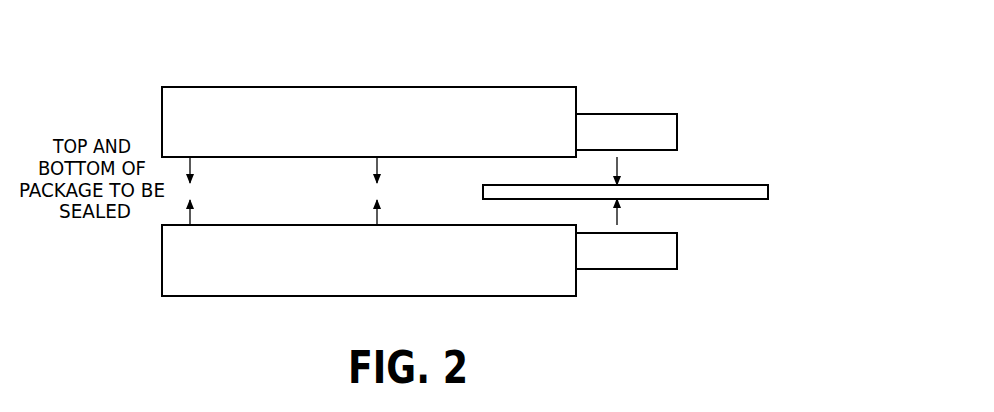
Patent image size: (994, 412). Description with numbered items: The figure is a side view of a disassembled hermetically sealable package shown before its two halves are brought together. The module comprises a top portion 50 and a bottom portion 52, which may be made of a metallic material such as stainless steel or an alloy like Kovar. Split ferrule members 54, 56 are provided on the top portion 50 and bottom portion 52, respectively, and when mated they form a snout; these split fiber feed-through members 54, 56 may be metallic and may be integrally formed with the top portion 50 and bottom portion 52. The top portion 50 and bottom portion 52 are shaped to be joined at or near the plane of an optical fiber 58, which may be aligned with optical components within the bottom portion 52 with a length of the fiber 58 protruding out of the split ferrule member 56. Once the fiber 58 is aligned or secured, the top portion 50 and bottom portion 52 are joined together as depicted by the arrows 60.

The top portion 50 is at (160, 122).
The bottom portion 52 is at (160, 251).
The split ferrule member 54 is at (637, 114).
The split ferrule member 56 is at (677, 258).
The optical fiber 58 is at (758, 169).
The arrows 60 is at (377, 162).